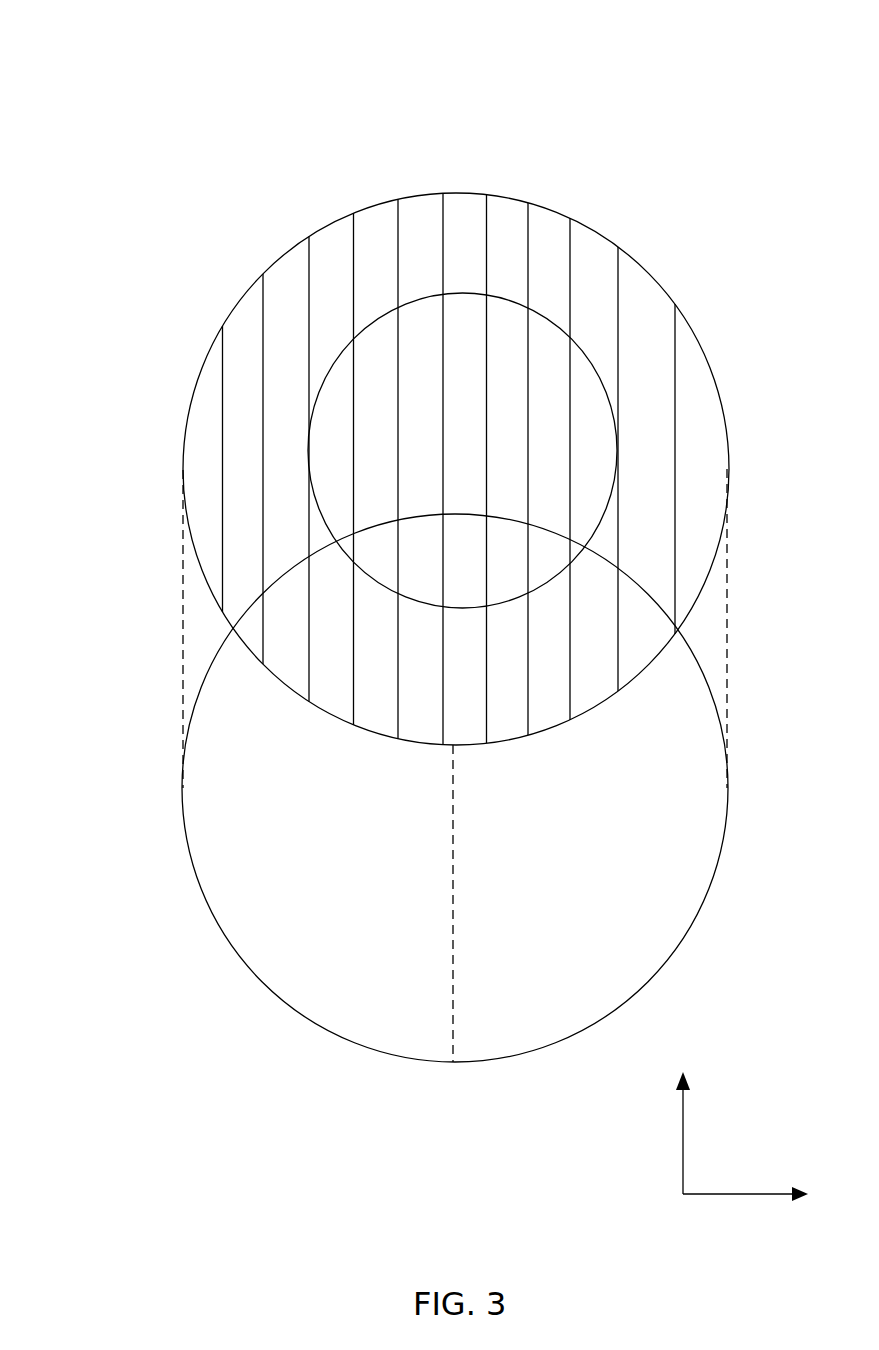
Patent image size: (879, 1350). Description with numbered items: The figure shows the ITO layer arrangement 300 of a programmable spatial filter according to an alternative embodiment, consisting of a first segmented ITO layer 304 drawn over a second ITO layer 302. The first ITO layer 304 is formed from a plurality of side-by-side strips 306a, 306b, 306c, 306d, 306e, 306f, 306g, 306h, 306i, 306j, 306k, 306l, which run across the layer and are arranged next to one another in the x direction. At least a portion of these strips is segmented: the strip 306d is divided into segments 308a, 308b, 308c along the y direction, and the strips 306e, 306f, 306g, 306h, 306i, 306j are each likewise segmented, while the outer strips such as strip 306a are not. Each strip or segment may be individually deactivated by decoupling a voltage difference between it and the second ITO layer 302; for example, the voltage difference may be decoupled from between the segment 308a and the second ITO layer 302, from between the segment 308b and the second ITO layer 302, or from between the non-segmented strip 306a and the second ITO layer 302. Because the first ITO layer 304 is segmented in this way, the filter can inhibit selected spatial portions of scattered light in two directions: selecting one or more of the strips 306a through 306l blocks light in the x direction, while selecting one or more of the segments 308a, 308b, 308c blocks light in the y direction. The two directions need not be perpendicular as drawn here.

The illumination configuration 300 is at (214, 62).
The second ITO layer 302 is at (230, 911).
The first segmented ITO layer 304 is at (180, 437).
The strip 306a is at (220, 322).
The strip 306b is at (257, 261).
The strip 306c is at (307, 341).
The strip 306d is at (352, 207).
The strip 306e is at (397, 173).
The strip 306f is at (437, 135).
The strip 306g is at (487, 178).
The strip 306h is at (528, 142).
The strip 306i is at (572, 183).
The strip 306j is at (615, 213).
The strip 306k is at (677, 243).
The strip 306l is at (725, 300).
The segment 308a is at (325, 615).
The segment 308b is at (337, 503).
The segment 308c is at (325, 355).